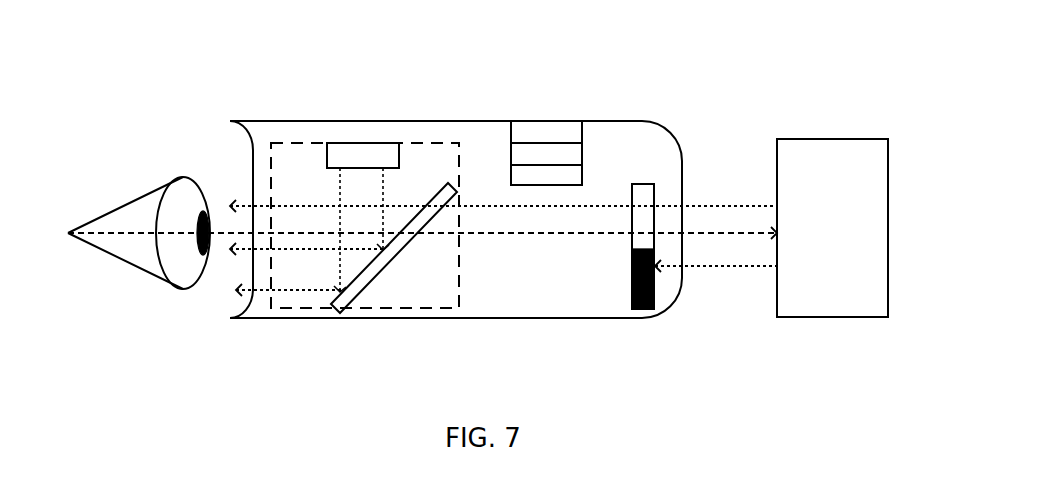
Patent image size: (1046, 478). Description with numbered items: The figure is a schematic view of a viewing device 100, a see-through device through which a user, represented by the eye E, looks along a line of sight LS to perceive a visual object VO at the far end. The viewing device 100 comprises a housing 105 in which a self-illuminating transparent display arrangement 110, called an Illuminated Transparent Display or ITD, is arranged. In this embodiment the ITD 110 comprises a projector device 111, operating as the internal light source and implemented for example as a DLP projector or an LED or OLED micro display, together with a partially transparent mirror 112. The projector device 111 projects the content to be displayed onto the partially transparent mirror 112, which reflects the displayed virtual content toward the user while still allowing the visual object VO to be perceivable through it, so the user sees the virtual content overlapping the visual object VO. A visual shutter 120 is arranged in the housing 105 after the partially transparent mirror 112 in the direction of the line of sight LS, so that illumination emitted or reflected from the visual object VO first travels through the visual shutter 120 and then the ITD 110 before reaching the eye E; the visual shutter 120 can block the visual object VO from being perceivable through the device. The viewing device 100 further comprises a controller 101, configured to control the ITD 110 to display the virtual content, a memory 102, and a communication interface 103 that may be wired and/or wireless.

The viewing device 100 is at (222, 102).
The housing 105 is at (300, 121).
The transparent display arrangement 110 is at (408, 143).
The projector device 111 is at (363, 155).
The partially transparent mirror 112 is at (365, 285).
The visual shutter 120 is at (643, 184).
The controller 101 is at (546, 133).
The memory 102 is at (546, 155).
The communication interface 103 is at (546, 176).
The eye E is at (139, 228).
The line of sight LS is at (189, 233).
The visual object VO is at (832, 228).